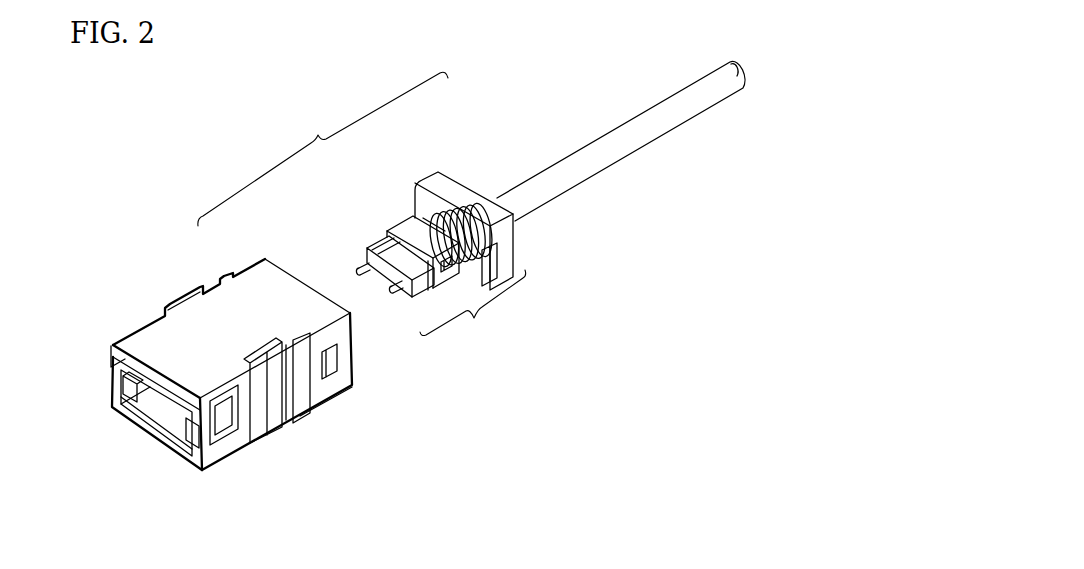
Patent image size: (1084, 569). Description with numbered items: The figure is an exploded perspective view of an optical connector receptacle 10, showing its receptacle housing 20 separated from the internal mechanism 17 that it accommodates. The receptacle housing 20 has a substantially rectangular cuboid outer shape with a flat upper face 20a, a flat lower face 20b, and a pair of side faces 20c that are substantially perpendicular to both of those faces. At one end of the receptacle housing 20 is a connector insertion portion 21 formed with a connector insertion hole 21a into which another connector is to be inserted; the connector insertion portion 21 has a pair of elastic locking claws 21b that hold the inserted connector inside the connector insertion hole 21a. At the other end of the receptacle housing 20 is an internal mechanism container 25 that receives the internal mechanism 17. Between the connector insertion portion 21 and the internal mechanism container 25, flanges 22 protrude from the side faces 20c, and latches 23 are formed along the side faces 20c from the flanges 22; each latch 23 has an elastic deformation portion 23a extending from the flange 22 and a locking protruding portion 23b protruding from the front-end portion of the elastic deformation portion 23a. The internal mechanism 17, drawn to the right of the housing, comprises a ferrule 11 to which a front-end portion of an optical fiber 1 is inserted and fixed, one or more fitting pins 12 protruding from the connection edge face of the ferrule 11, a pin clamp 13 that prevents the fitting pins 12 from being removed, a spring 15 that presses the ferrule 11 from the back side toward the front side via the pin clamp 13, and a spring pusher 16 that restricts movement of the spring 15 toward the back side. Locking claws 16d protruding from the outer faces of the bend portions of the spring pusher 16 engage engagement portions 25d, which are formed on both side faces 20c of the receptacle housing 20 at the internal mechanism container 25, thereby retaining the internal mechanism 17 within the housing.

The optical fiber 1 is at (619, 114).
The optical connector receptacle 10 is at (323, 149).
The ferrule 11 is at (376, 248).
The fitting pins 12 is at (395, 292).
The pin clamp 13 is at (396, 238).
The spring 15 is at (442, 216).
The spring pusher 16 is at (501, 205).
The locking claws 16d is at (497, 264).
The internal mechanism 17 is at (473, 313).
The receptacle housing 20 is at (254, 339).
The upper face 20a is at (145, 343).
The lower face 20b is at (332, 400).
The side faces 20c is at (219, 279).
The connector insertion portion 21 is at (144, 431).
The connector insertion hole 21a is at (135, 423).
The elastic locking claws 21b is at (122, 390).
The flanges 22 is at (302, 397).
The latches 23 is at (231, 394).
The elastic deformation portion 23a is at (297, 420).
The locking protruding portion 23b is at (260, 432).
The internal mechanism container 25 is at (353, 299).
The engagement portions 25d is at (333, 361).